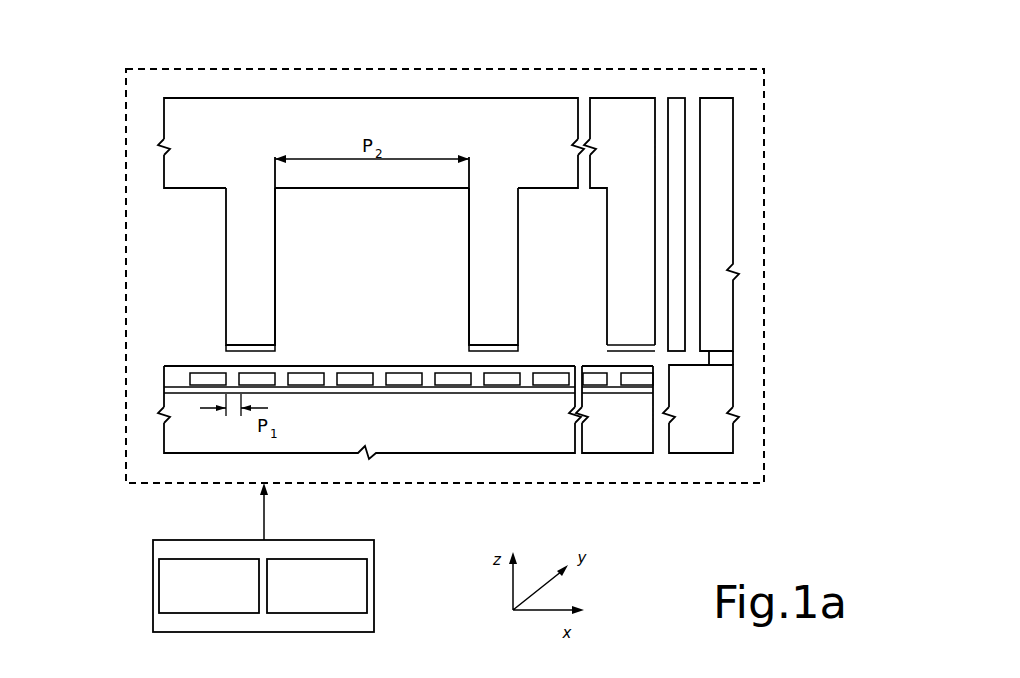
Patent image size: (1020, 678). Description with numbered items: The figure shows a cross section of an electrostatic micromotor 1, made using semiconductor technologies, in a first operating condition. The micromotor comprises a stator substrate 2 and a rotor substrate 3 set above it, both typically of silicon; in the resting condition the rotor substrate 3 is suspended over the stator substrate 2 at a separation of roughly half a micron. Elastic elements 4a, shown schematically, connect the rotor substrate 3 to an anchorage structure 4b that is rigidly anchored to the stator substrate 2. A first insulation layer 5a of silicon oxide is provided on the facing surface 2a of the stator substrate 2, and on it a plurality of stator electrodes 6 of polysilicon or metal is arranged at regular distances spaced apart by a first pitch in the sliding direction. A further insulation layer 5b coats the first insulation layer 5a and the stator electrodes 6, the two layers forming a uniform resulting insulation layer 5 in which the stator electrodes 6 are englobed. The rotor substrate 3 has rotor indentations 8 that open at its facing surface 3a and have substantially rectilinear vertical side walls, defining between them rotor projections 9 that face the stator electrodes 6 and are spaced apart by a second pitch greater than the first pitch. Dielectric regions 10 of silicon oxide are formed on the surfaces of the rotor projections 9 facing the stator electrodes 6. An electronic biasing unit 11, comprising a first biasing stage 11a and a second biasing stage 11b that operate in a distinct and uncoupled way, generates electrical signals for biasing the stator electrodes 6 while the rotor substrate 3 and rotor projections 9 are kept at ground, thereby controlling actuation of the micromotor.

The electrostatic micromotor 1 is at (108, 79).
The stator substrate 2 is at (187, 430).
The facing surface of the stator substrate 2a is at (176, 388).
The rotor substrate 3 is at (173, 125).
The facing surface of the rotor substrate 3a is at (196, 192).
The elastic elements 4a is at (677, 103).
The anchorage structure 4b is at (722, 195).
The resulting insulation layer 5 is at (184, 363).
The first insulation layer 5a is at (550, 387).
The further insulation layer 5b is at (565, 370).
The stator electrodes 6 is at (396, 381).
The rotor indentations 8 is at (277, 247).
The rotor projections 9 is at (233, 262).
The dielectric regions 10 is at (277, 348).
The electronic biasing unit 11 is at (150, 584).
The first biasing stage 11a is at (241, 565).
The second biasing stage 11b is at (345, 563).